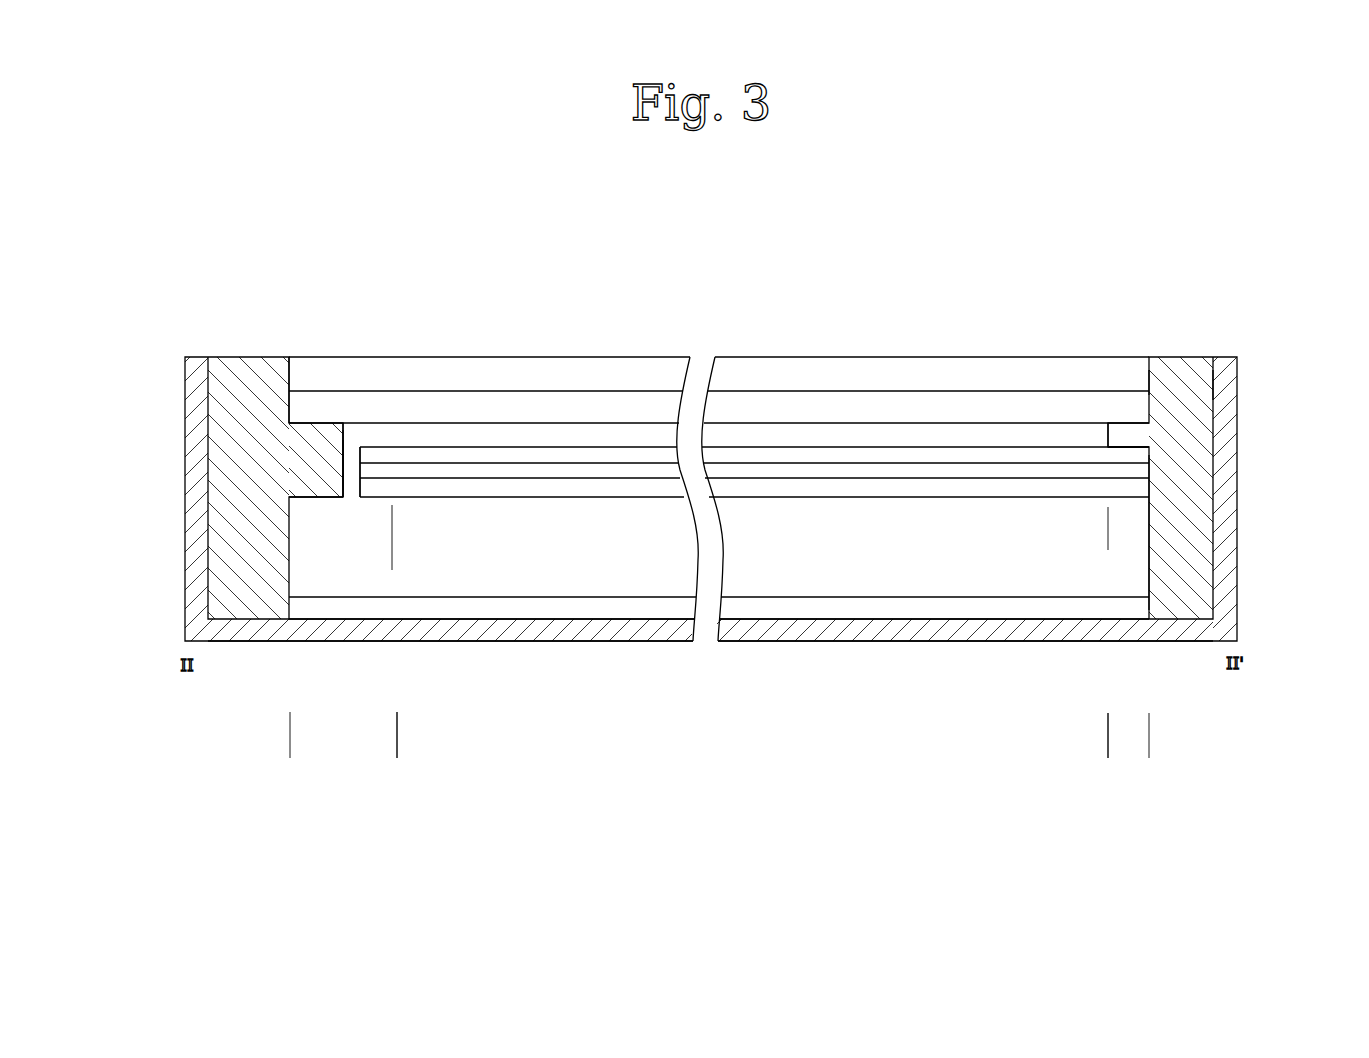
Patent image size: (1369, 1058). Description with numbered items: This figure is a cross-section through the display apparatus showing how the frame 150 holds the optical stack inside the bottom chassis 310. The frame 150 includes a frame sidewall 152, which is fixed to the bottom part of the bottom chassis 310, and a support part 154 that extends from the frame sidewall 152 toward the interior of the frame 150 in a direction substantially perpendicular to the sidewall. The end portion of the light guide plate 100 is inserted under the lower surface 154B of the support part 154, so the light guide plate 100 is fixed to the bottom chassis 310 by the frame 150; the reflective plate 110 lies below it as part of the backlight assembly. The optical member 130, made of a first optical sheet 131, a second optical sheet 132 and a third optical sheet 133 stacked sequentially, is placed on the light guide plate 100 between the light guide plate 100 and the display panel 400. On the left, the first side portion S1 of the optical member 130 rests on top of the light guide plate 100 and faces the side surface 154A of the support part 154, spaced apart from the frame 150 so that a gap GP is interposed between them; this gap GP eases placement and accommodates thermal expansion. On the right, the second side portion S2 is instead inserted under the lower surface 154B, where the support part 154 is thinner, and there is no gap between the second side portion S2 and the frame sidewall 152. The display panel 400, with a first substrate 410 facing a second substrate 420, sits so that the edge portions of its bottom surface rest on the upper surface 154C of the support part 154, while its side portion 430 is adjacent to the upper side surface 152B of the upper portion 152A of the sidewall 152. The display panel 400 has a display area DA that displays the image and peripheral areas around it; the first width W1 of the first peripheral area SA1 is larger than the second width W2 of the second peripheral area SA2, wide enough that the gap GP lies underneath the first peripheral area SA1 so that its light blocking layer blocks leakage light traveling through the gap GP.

The light guide plate 100 is at (505, 585).
The reflective plate 110 is at (433, 612).
The optical member 130 is at (754, 382).
The first optical sheet 131 is at (635, 485).
The second optical sheet 132 is at (600, 470).
The third optical sheet 133 is at (557, 455).
The frame 150 is at (706, 499).
The frame sidewall 152 is at (220, 373).
The upper portion of sidewall 152A is at (1203, 387).
The upper side surface 152B is at (1140, 382).
The support part 154 is at (303, 460).
The side surface of support part 154A is at (352, 438).
The lower surface of support part 154B is at (311, 504).
The upper surface of support part 154C is at (326, 418).
The bottom chassis 310 is at (368, 643).
The display panel 400 is at (719, 345).
The first substrate 410 is at (500, 397).
The second substrate 420 is at (455, 365).
The side portion of display panel 430 is at (281, 390).
The first side portion S1 is at (340, 455).
The second side portion S2 is at (1158, 487).
The gap GP is at (352, 494).
The first width W1 is at (291, 565).
The second width W2 is at (1147, 544).
The first peripheral area SA1 is at (395, 755).
The second peripheral area SA2 is at (1147, 755).
The display area DA is at (1106, 755).